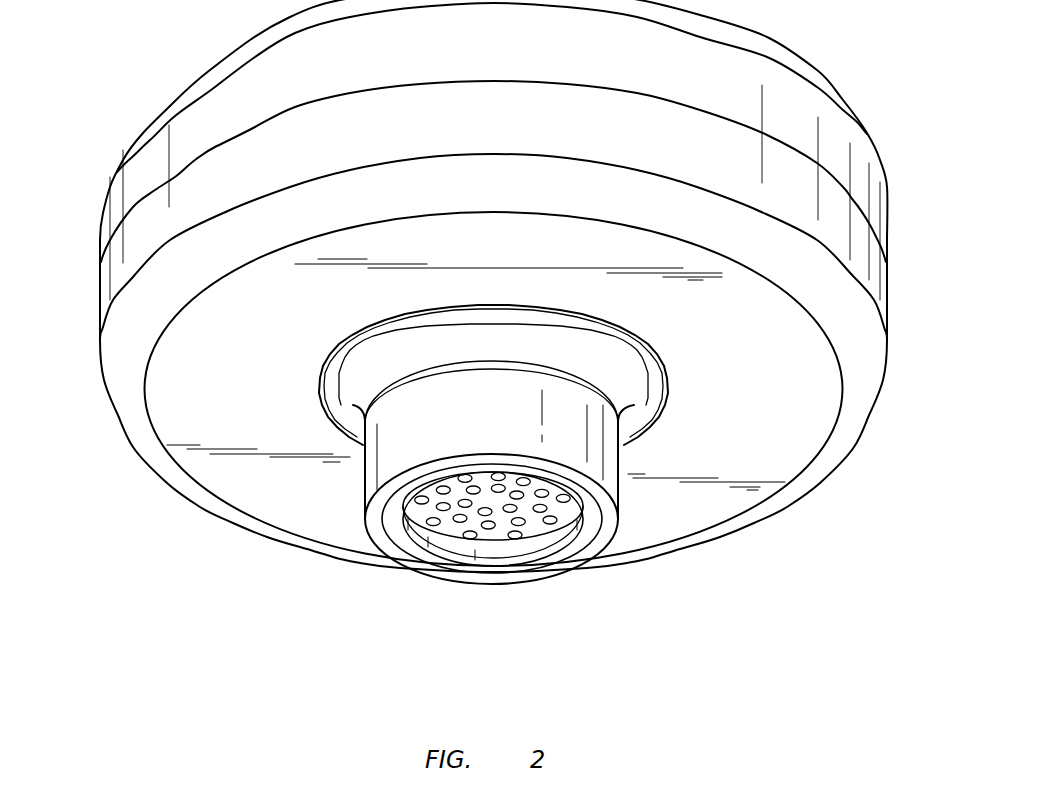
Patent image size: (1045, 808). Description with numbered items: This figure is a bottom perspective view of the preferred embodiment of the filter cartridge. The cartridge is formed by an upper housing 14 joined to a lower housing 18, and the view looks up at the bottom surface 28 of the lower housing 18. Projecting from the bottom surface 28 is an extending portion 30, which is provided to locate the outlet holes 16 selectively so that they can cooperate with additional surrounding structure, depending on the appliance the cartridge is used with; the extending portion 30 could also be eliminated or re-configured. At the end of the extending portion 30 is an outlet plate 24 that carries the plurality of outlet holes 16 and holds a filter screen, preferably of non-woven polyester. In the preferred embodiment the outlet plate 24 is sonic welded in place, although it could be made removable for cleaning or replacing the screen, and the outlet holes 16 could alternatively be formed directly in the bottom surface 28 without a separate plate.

The upper housing 14 is at (100, 212).
The lower housing 18 is at (878, 398).
The bottom surface 28 is at (233, 497).
The extending portion 30 is at (603, 470).
The outlet holes 16 is at (517, 537).
The outlet plate 24 is at (452, 528).